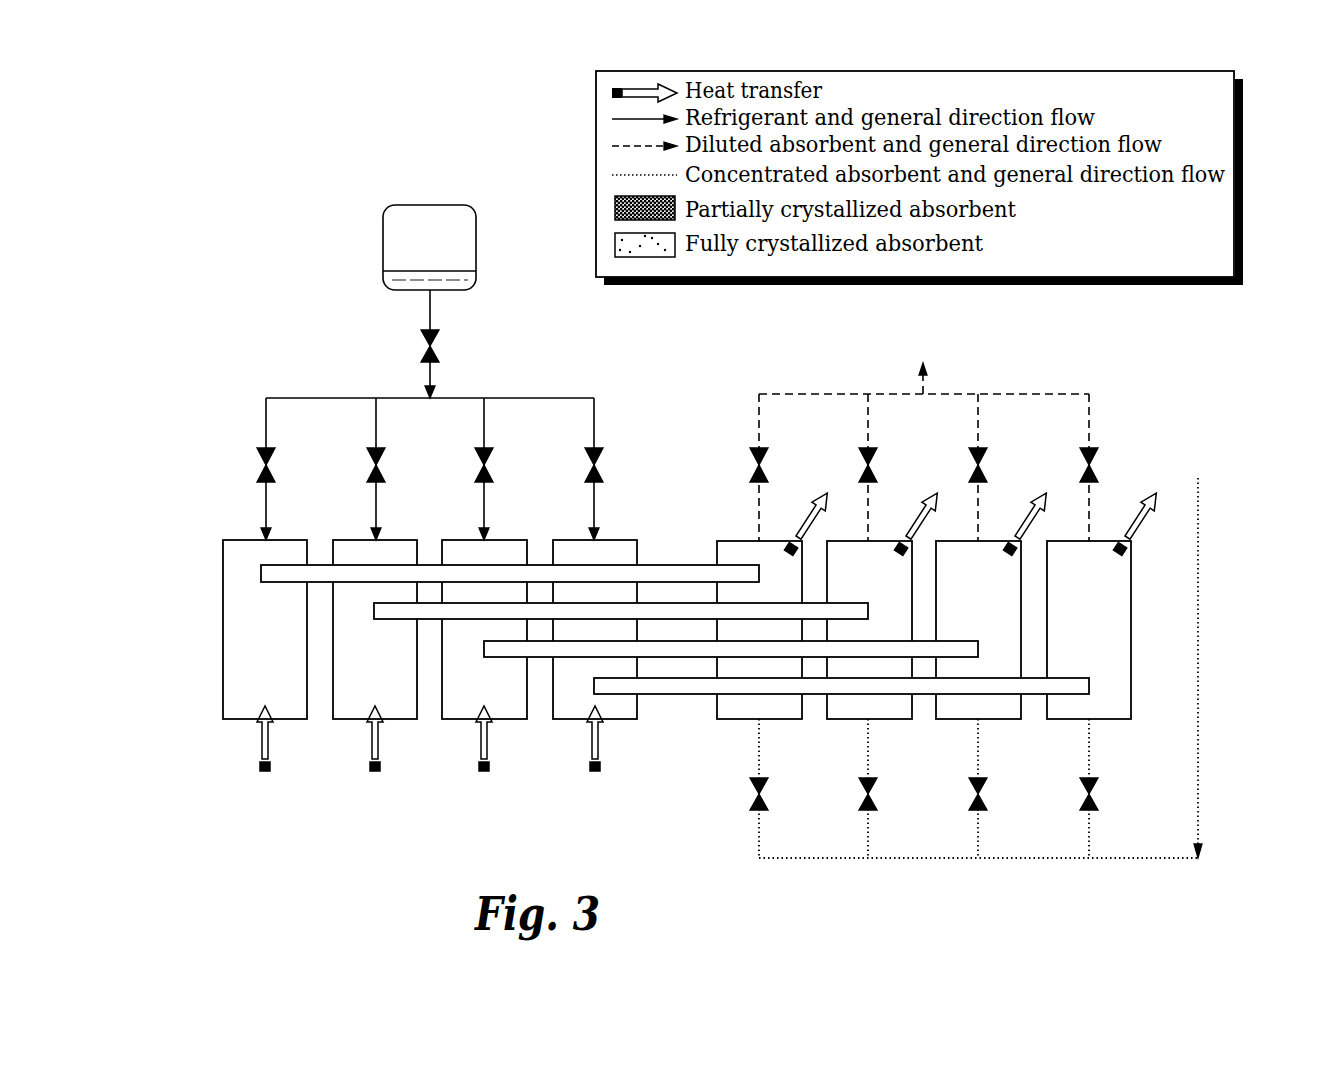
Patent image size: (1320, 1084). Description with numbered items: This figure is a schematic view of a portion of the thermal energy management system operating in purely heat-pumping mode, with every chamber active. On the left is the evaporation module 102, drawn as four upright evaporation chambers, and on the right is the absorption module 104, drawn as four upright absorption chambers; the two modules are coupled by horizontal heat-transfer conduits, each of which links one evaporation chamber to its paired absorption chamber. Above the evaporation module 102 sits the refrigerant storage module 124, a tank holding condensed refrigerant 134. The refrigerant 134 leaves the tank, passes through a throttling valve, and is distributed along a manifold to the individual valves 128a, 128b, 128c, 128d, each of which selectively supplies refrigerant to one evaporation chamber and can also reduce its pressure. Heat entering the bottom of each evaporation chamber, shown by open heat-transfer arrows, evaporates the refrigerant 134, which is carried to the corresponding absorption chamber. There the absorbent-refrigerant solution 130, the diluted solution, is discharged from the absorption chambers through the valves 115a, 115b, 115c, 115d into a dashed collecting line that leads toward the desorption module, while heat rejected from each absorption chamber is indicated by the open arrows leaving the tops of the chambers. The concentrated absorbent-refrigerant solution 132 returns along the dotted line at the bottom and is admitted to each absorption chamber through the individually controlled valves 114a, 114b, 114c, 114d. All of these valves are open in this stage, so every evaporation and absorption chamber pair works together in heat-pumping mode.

The evaporation module 102 is at (212, 627).
The absorption module 104 is at (1146, 574).
The valve 114a is at (753, 804).
The valve 114b is at (863, 804).
The valve 114c is at (973, 804).
The valve 114d is at (1081, 804).
The valve 115a is at (751, 454).
The valve 115b is at (861, 454).
The valve 115c is at (971, 454).
The valve 115d is at (1081, 454).
The refrigerant storage module 124 is at (475, 220).
The valve 128a is at (256, 454).
The valve 128b is at (366, 454).
The valve 128c is at (474, 454).
The valve 128d is at (584, 454).
The absorbent-refrigerant solution 130 is at (817, 394).
The concentrated absorbent-refrigerant solution 132 is at (1198, 727).
The refrigerant 134 is at (476, 282).